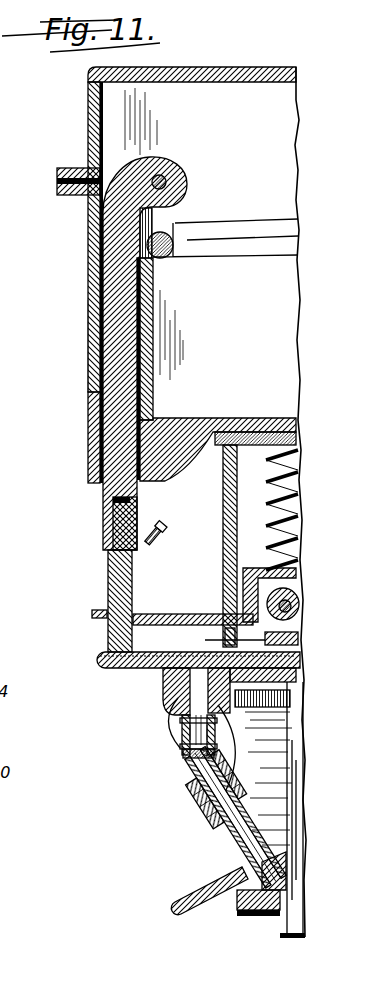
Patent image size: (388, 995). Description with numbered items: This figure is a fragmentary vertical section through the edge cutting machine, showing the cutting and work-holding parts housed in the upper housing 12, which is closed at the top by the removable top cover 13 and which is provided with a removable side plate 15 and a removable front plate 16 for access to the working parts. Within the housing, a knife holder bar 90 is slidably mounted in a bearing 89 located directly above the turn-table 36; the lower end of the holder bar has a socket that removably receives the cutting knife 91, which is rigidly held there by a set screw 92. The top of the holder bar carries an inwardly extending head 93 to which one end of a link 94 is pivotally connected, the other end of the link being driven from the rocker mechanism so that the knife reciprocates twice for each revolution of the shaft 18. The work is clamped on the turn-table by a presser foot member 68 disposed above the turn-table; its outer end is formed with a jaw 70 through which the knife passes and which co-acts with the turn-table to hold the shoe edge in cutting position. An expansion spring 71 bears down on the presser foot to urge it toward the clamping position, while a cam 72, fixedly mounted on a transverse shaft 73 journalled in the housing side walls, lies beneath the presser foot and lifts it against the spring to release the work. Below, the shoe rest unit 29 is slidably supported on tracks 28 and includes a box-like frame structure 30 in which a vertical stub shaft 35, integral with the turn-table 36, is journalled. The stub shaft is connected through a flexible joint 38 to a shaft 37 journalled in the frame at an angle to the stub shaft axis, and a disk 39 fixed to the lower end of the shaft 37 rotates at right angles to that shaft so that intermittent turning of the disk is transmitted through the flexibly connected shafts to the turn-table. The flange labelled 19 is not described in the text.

The top cover 13 is at (98, 100).
The flange 19 is at (8, 201).
The shaft 18 is at (8, 270).
The side plate 15 is at (7, 346).
The front plate 16 is at (88, 350).
The bearing 89 is at (90, 457).
The head 93 is at (170, 166).
The link 94 is at (170, 221).
The tracks 28 is at (256, 252).
The upper housing 12 is at (180, 234).
The knife holder bar 90 is at (106, 515).
The cutting knife 91 is at (112, 569).
The set screw 92 is at (164, 538).
The jaw 70 is at (98, 610).
The expansion spring 71 is at (264, 492).
The cam 72 is at (268, 597).
The transverse shaft 73 is at (275, 620).
The presser foot member 68 is at (160, 613).
The turn-table 36 is at (131, 664).
The box-like frame structure 30 is at (270, 810).
The vertical stub shaft 35 is at (181, 726).
The flexible joint 38 is at (193, 753).
The shoe rest unit 29 is at (188, 791).
The shaft 37 is at (193, 834).
The disk 39 is at (177, 907).